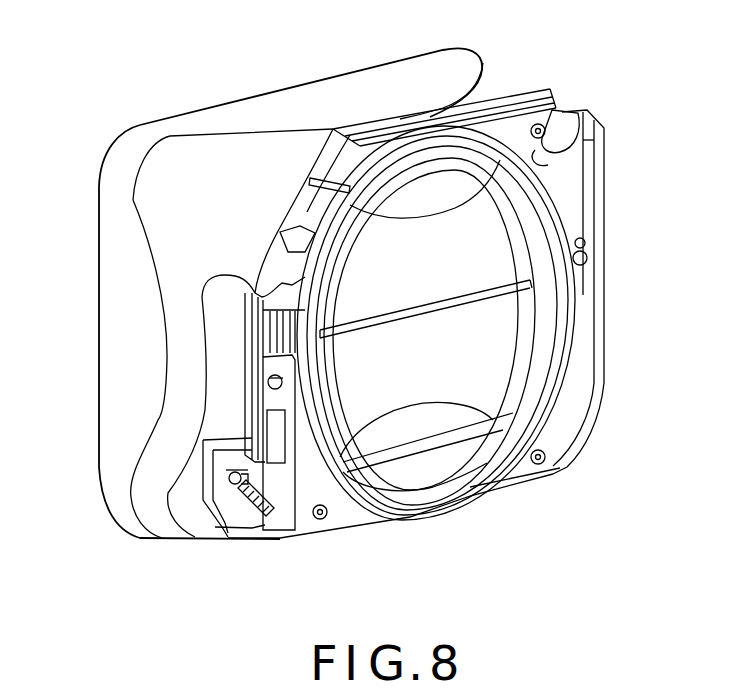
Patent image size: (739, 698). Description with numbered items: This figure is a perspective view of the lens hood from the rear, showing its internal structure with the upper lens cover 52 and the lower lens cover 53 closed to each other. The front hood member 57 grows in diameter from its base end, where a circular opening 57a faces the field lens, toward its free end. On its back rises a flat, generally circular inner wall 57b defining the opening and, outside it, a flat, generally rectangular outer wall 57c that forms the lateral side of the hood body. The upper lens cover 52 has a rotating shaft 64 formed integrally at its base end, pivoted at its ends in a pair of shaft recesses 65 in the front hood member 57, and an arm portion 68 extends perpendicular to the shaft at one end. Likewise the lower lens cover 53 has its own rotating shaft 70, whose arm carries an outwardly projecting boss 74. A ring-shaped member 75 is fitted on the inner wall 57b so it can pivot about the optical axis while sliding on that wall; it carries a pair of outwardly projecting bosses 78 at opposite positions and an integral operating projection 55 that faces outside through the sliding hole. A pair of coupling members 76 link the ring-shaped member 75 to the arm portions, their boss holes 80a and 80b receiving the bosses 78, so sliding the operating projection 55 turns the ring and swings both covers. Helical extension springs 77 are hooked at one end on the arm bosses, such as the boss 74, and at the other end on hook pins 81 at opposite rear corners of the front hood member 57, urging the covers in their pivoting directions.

The front hood member 57 is at (292, 88).
The circular opening 57a is at (550, 333).
The inner wall 57b is at (557, 357).
The outer wall 57c is at (590, 410).
The rotating shaft 64 is at (437, 175).
The arm portion 68 is at (560, 133).
The coupling members 76 is at (604, 138).
The upper lens cover 52 is at (510, 240).
The boss hole 80a is at (590, 240).
The bosses 78 is at (583, 257).
The lower lens cover 53 is at (517, 313).
The shaft recesses 65 is at (493, 198).
The operating projection 55 is at (287, 237).
The boss hole 80b is at (270, 375).
The rotating shaft 70 is at (433, 445).
The ring-shaped member 75 is at (520, 497).
The hook pins 81 is at (232, 483).
The helical extension springs 77 is at (225, 530).
The boss 74 is at (270, 522).